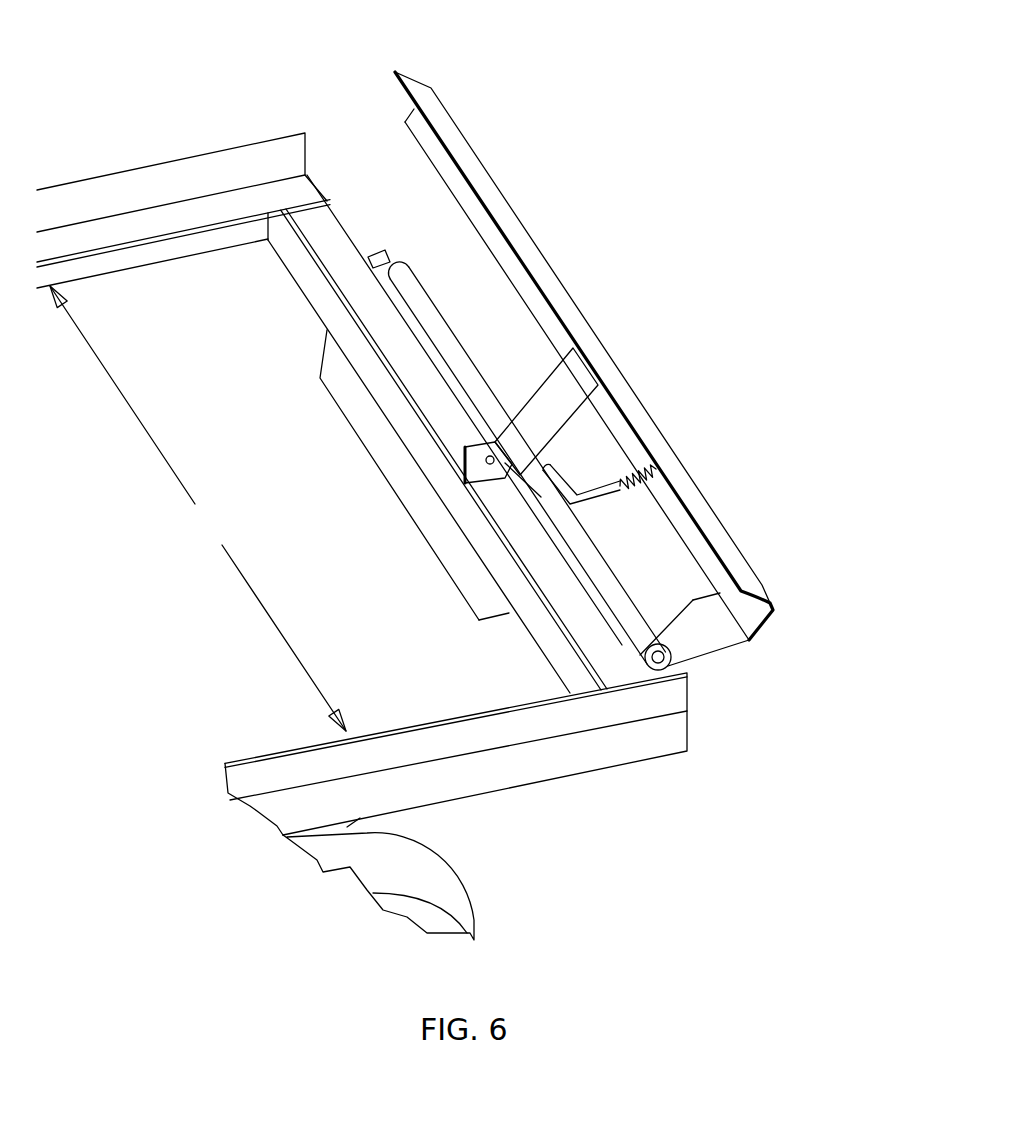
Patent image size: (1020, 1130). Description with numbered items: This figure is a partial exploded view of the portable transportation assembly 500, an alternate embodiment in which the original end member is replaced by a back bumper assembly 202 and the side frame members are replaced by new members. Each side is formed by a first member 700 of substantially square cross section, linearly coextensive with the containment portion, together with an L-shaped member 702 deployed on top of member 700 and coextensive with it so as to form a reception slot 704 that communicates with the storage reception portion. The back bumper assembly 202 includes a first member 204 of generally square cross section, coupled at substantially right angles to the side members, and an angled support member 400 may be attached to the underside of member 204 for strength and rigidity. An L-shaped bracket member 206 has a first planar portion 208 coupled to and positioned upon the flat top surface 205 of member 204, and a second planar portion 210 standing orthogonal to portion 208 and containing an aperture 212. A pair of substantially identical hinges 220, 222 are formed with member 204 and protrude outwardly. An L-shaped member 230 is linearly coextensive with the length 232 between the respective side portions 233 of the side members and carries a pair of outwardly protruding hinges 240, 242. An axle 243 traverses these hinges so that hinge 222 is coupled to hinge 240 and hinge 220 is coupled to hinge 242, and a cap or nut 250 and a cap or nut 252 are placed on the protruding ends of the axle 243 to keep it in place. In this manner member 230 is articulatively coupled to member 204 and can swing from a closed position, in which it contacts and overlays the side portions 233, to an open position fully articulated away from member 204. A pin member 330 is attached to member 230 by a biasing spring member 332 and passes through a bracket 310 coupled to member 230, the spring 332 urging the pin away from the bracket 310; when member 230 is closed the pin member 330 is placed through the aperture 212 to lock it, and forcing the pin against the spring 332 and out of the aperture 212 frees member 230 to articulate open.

The portable transportation assembly 500 is at (238, 97).
The L-shaped member 702 is at (118, 187).
The reception slot 704 is at (120, 217).
The hinge 220 is at (377, 258).
The cap or nut 252 is at (386, 256).
The hinge 242 is at (437, 210).
The axle 243 is at (437, 307).
The back bumper assembly 202 is at (612, 262).
The flat top surface 205 is at (293, 273).
The first member 204 is at (320, 308).
The L-shaped bracket member 206 is at (338, 407).
The bracket 310 is at (578, 352).
The pin member 330 is at (603, 487).
The L-shaped member 230 is at (670, 463).
The biasing spring member 332 is at (667, 478).
The hinge 240 is at (693, 600).
The hinge 222 is at (673, 658).
The cap or nut 250 is at (668, 668).
The first member 700 is at (543, 763).
The side portion 233 is at (350, 763).
The length 232 is at (198, 508).
The aperture 212 is at (495, 470).
The angled support member 400 is at (437, 540).
The second planar portion 210 is at (490, 462).
The first planar portion 208 is at (463, 477).